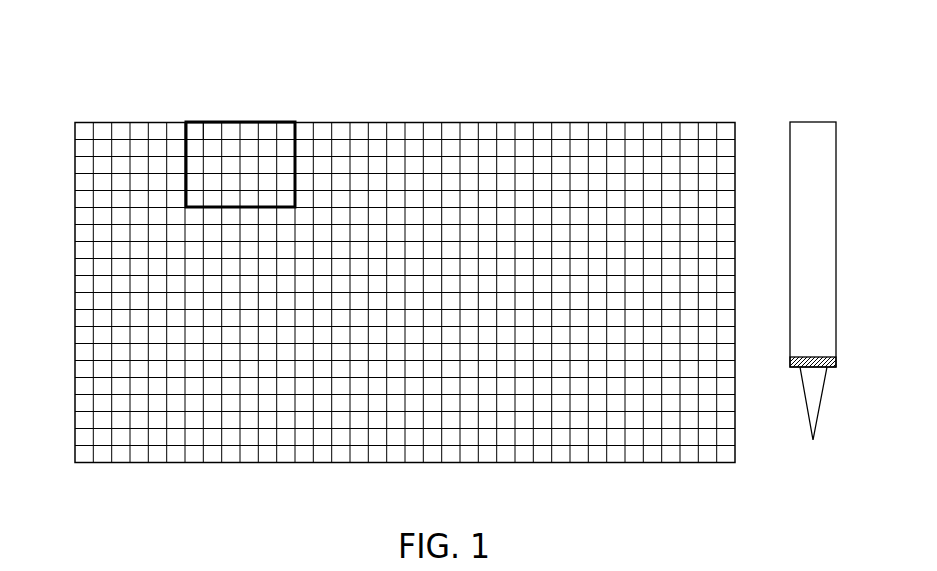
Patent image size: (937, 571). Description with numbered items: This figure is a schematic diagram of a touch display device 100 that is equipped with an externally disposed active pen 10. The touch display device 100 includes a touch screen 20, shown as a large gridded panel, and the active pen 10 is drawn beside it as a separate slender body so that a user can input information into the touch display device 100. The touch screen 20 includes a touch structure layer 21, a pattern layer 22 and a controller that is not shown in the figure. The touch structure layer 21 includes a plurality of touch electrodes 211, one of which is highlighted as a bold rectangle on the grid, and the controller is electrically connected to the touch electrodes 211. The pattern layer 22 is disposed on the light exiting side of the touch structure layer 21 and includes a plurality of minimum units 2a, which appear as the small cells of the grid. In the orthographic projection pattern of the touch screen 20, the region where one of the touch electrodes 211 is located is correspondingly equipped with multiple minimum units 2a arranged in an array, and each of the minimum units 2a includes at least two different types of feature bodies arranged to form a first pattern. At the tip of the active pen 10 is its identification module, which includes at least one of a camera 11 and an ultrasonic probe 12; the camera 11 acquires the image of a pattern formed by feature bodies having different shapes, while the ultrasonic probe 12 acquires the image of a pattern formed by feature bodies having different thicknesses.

The touch display device 100 is at (833, 48).
The active pen 10 is at (805, 143).
The camera 11 is at (827, 370).
The ultrasonic probe 12 is at (800, 371).
The touch screen 20 is at (73, 128).
The touch structure layer 21 is at (266, 116).
The touch electrodes 211 is at (240, 164).
The pattern layer 22 is at (190, 124).
The minimum units 2a is at (194, 131).